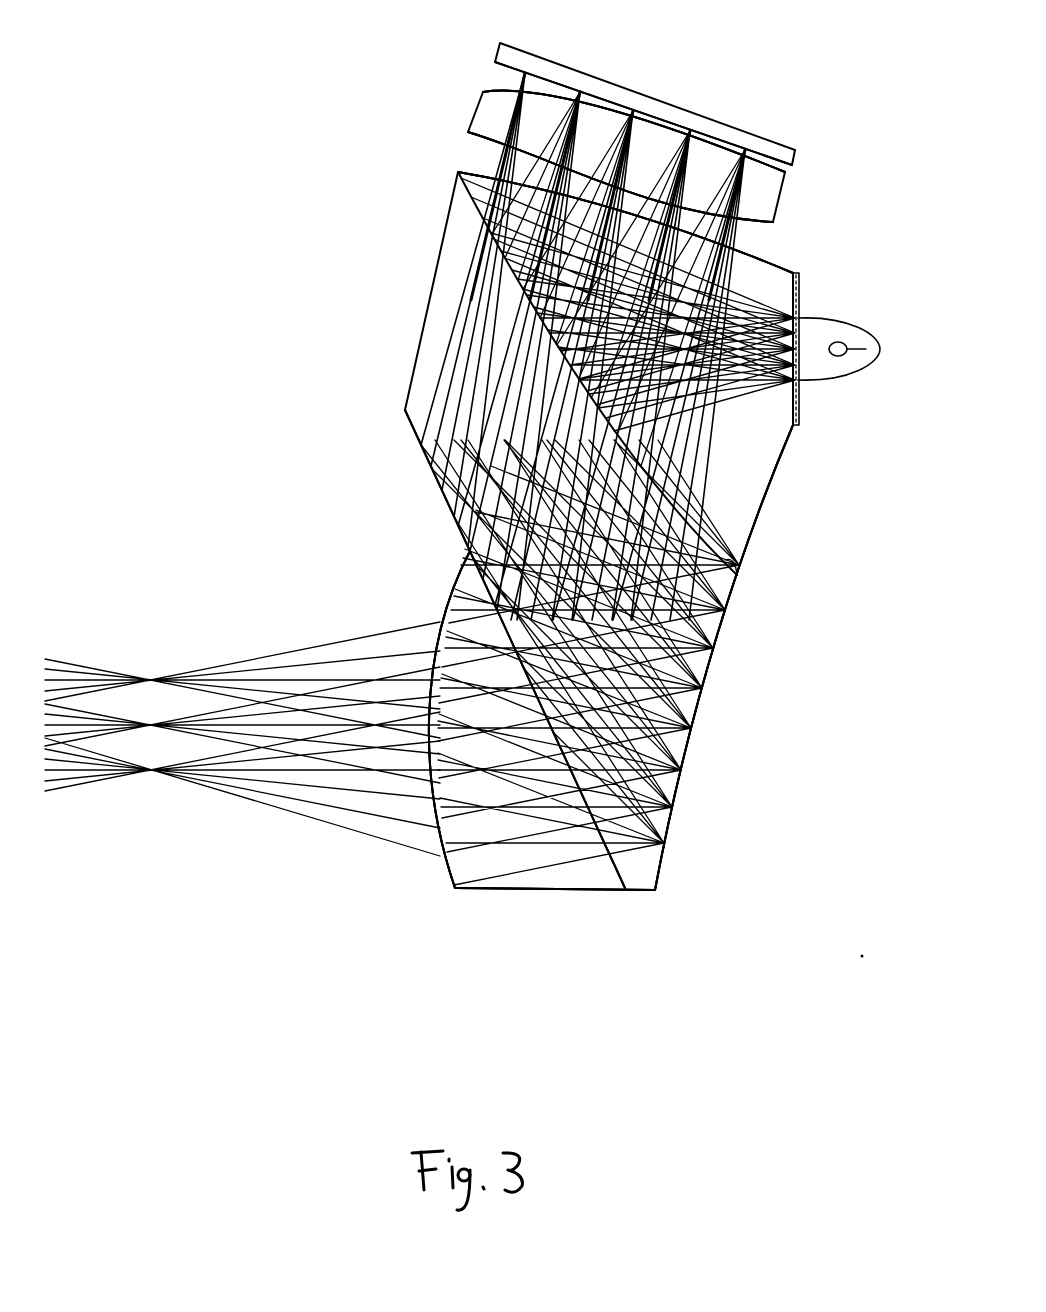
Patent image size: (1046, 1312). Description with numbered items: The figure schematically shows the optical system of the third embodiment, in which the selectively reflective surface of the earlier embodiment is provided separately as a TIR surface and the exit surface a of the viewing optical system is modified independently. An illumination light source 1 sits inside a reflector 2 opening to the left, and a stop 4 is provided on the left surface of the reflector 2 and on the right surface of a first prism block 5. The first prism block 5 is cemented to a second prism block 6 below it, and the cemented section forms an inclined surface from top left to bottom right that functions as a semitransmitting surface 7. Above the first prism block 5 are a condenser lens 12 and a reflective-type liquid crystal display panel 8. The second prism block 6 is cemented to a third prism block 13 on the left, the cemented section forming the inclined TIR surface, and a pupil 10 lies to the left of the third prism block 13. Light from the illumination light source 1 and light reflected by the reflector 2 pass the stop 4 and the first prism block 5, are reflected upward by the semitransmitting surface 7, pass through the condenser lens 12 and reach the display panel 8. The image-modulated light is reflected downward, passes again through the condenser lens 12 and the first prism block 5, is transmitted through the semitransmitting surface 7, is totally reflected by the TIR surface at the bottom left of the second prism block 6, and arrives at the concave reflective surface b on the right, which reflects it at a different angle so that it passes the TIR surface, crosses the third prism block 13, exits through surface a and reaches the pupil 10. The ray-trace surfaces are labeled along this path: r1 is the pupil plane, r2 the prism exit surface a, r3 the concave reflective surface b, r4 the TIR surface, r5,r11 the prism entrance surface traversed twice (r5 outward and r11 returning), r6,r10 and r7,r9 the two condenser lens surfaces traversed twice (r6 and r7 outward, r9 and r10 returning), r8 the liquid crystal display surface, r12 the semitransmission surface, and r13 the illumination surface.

The illumination light source 1 is at (848, 347).
The reflector 2 is at (848, 370).
The stop 4 is at (797, 425).
The first prism block 5 is at (755, 473).
The second prism block 6 is at (448, 255).
The semitransmitting surface 7 is at (733, 560).
The reflective-type liquid crystal display panel 8 is at (662, 110).
The pupil 10 is at (130, 767).
The condenser lens 12 is at (770, 205).
The third prism block 13 is at (543, 885).
The TIR surface TIR is at (470, 578).
The prism exit surface a is at (440, 847).
The concave reflective surface b is at (707, 703).
The pupil surface r1 is at (130, 677).
The prism exit surface r2 is at (452, 880).
The concave reflective surface r3 is at (697, 748).
The TIR surface r4 is at (610, 870).
The prism entrance surface r5,r11 is at (767, 262).
The prism entrance surface r5 is at (625, 222).
The prism entrance surface r11 is at (625, 222).
The condenser lens surface r6,r10 is at (483, 138).
The condenser lens surface r6 is at (620, 177).
The condenser lens surface r10 is at (620, 177).
The condenser lens surface r7,r9 is at (507, 92).
The condenser lens surface r7 is at (634, 131).
The condenser lens surface r9 is at (634, 131).
The liquid crystal display surface r8 is at (560, 78).
The semitransmission surface r12 is at (693, 523).
The illumination surface r13 is at (787, 410).